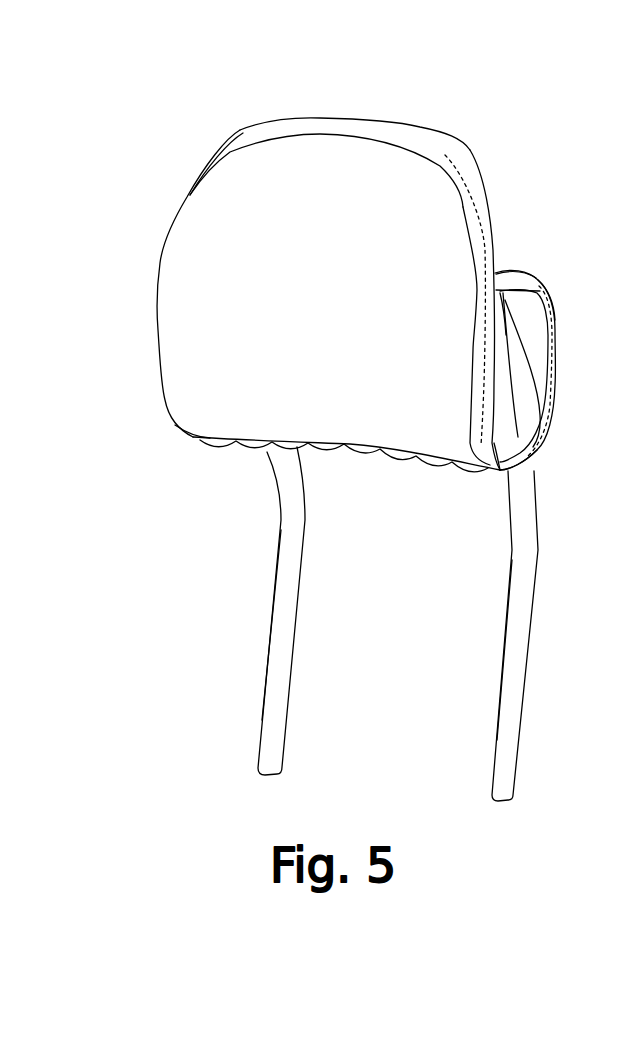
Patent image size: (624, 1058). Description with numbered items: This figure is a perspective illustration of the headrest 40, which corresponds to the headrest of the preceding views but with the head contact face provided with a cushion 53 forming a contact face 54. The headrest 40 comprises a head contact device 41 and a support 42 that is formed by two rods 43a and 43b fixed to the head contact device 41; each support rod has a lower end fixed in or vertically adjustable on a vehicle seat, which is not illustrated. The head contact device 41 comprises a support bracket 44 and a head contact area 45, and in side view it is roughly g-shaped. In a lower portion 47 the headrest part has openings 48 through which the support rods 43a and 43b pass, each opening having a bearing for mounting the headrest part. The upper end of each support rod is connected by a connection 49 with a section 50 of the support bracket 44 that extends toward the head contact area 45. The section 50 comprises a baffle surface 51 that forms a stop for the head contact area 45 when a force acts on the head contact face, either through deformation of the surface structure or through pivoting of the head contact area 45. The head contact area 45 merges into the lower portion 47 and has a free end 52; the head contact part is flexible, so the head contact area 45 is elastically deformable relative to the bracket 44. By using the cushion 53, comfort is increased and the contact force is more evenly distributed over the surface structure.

The headrest 40 is at (170, 157).
The head contact device 41 is at (263, 123).
The support 42 is at (252, 589).
The support rod 43a is at (275, 700).
The support rod 43b is at (508, 712).
The support bracket 44 is at (558, 330).
The head contact area 45 is at (327, 128).
The lower portion 47 is at (524, 470).
The openings 48 is at (502, 435).
The connection 49 is at (543, 273).
The section 50 is at (503, 272).
The baffle surface 51 is at (507, 296).
The free end 52 is at (417, 127).
The cushion 53 is at (217, 398).
The contact face 54 is at (182, 300).